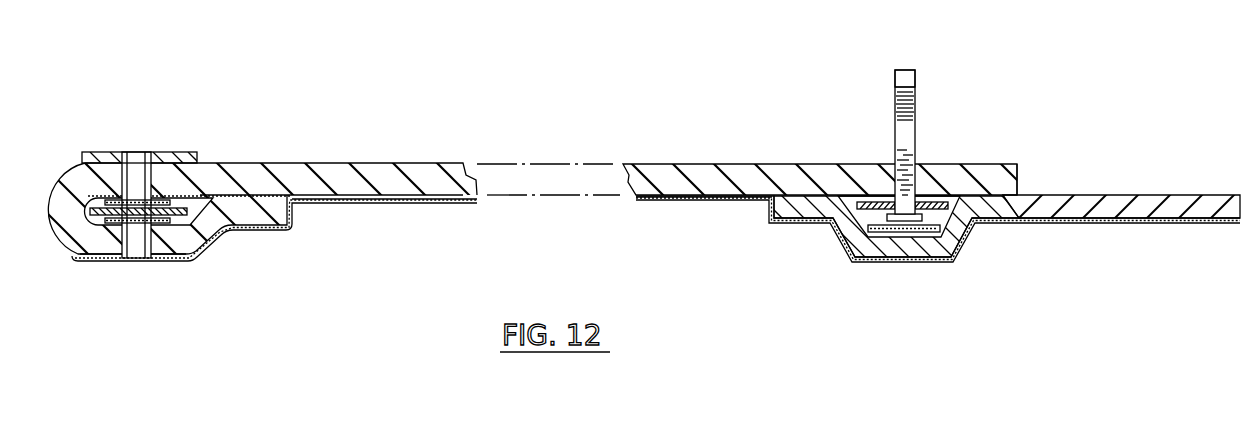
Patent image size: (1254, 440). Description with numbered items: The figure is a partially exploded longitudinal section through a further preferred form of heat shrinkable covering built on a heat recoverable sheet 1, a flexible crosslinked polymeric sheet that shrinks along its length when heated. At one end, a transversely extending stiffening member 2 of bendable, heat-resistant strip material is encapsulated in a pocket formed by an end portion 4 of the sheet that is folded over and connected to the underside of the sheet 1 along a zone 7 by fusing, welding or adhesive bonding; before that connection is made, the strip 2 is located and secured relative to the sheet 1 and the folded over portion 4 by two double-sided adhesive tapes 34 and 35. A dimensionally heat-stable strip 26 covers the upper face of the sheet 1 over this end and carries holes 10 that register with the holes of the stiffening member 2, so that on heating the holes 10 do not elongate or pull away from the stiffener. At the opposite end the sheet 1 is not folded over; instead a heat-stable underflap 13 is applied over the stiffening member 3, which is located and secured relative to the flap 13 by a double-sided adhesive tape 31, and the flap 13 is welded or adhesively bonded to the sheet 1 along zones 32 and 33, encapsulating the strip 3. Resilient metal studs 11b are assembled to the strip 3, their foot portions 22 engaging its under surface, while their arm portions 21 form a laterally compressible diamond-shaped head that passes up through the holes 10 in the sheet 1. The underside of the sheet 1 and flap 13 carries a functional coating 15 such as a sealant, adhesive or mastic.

The heat recoverable sheet 1 is at (338, 162).
The stiffening member 2 is at (222, 240).
The stiffening member 3 is at (928, 202).
The folded over end portion 4 is at (164, 243).
The connection zone 7 is at (259, 194).
The holes 10 is at (146, 152).
The stud 11b is at (895, 75).
The underflap 13 is at (908, 250).
The functional coating 15 is at (100, 265).
The arm portions 21 is at (912, 130).
The foot portions 22 is at (922, 217).
The strip 26 is at (184, 152).
The double-sided adhesive tape 31 is at (952, 245).
The connection zone 32 is at (783, 194).
The connection zone 33 is at (990, 190).
The double-sided adhesive tape 34 is at (173, 196).
The double-sided adhesive tape 35 is at (183, 228).